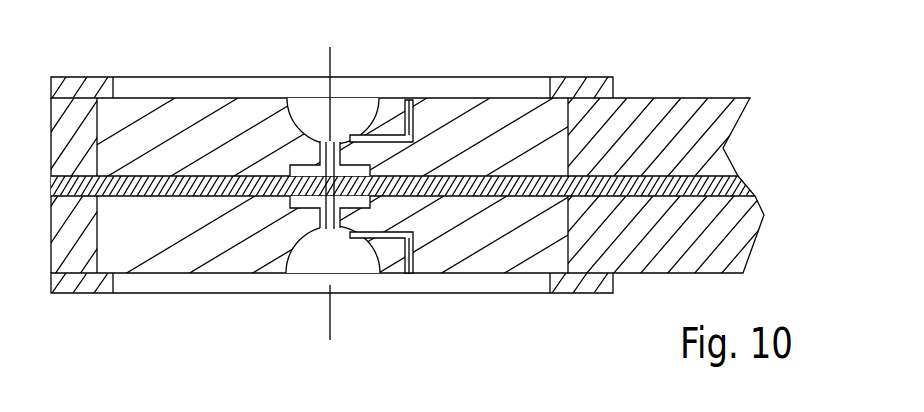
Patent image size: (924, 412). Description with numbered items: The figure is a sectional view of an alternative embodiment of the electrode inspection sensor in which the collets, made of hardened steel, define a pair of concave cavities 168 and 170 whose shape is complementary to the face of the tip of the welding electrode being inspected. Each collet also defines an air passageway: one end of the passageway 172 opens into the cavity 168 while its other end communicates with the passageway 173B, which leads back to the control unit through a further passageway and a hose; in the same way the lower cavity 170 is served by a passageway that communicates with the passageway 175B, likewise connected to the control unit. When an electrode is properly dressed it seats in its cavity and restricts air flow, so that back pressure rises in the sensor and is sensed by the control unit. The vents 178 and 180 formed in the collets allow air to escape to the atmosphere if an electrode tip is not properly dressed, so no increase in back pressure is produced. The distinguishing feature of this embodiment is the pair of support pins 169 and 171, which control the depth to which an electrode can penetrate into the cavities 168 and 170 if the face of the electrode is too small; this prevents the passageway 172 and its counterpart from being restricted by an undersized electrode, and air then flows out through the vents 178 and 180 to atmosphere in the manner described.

The concave cavity 168 is at (288, 125).
The support pin 169 is at (332, 141).
The concave cavity 170 is at (291, 257).
The support pin 171 is at (335, 228).
The passageway 172 is at (320, 145).
The passageway 173B is at (738, 174).
The passageway 175B is at (757, 200).
The vent 178 is at (408, 99).
The vent 180 is at (408, 272).